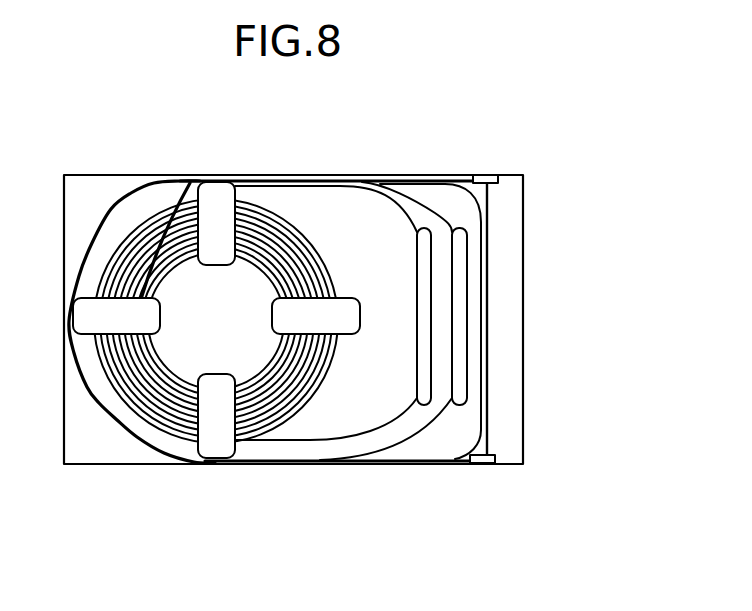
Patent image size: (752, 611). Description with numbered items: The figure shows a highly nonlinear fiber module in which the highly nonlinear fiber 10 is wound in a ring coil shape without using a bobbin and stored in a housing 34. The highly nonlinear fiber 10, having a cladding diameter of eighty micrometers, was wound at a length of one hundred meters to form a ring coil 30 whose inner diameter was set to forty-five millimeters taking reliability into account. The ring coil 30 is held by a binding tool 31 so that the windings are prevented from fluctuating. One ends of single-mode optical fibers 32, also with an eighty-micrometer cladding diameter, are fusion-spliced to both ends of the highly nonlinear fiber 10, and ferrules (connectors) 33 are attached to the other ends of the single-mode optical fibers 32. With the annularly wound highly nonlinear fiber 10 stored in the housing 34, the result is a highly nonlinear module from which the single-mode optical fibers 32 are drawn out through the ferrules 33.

The highly nonlinear fiber 10 is at (321, 189).
The ring coil 30 is at (129, 407).
The binding tool 31 is at (160, 315).
The single-mode optical fibers 32 is at (112, 213).
The ferrules (connectors) 33 is at (486, 175).
The housing 34 is at (523, 271).